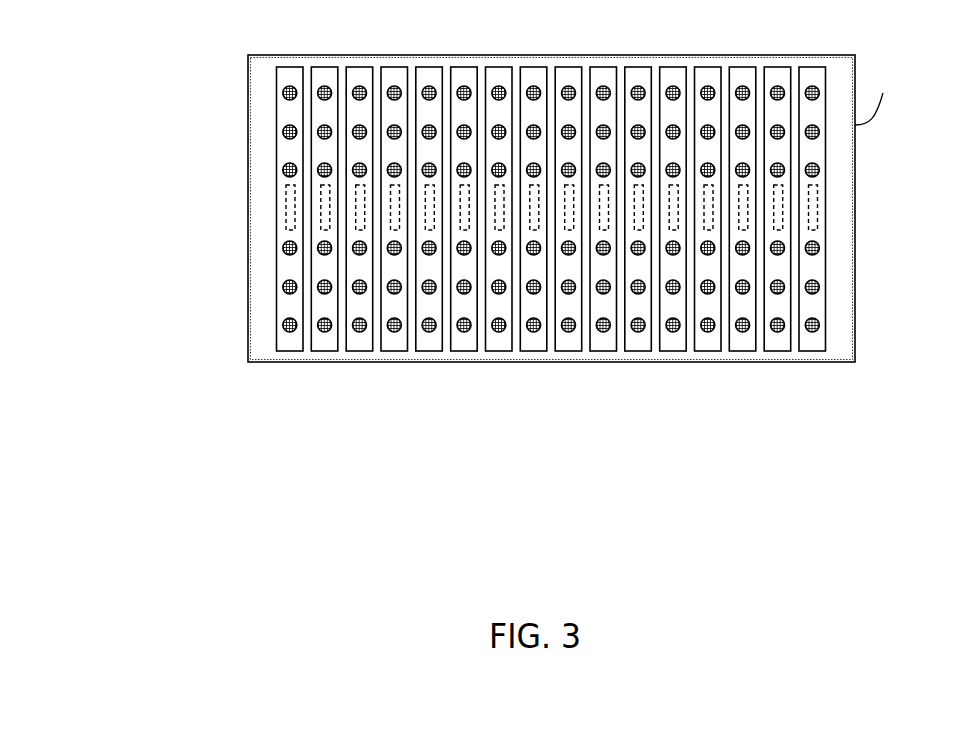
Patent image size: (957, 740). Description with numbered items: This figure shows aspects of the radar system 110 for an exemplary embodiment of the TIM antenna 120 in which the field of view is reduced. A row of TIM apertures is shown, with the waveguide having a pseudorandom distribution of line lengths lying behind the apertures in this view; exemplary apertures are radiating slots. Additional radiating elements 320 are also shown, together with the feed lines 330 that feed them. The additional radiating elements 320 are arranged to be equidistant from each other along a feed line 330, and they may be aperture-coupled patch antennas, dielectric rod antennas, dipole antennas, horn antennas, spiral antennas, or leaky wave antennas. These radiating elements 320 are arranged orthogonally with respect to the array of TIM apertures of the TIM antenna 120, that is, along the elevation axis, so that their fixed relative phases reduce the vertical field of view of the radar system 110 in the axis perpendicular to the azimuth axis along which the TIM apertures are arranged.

The radar system 110 is at (141, 115).
The TIM antenna 120 is at (886, 92).
The additional radiating elements 320 is at (279, 257).
The feed lines 330 is at (326, 343).